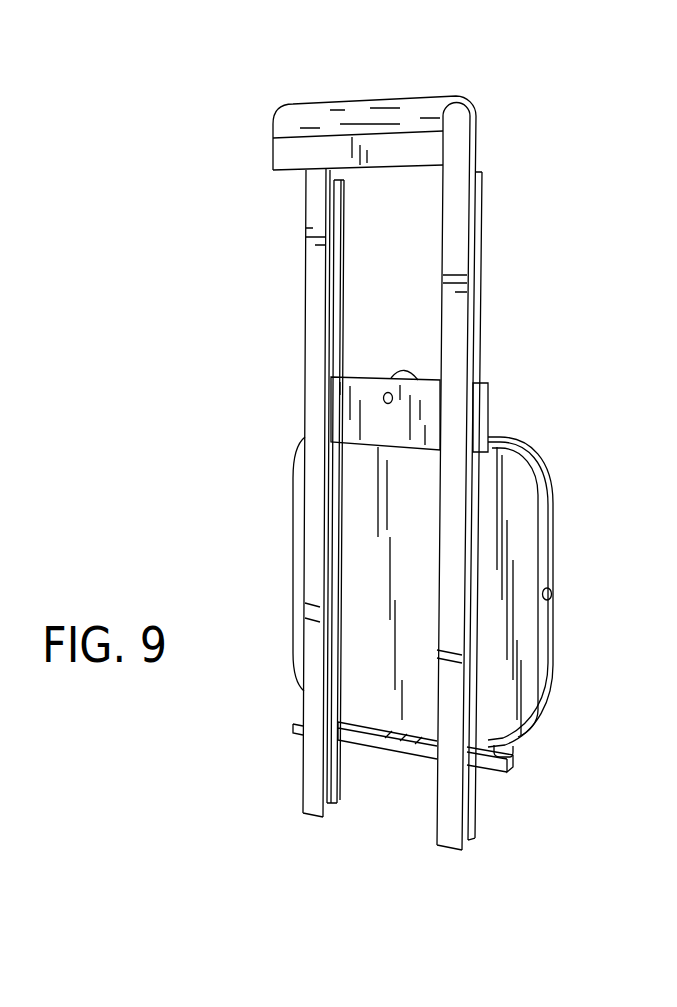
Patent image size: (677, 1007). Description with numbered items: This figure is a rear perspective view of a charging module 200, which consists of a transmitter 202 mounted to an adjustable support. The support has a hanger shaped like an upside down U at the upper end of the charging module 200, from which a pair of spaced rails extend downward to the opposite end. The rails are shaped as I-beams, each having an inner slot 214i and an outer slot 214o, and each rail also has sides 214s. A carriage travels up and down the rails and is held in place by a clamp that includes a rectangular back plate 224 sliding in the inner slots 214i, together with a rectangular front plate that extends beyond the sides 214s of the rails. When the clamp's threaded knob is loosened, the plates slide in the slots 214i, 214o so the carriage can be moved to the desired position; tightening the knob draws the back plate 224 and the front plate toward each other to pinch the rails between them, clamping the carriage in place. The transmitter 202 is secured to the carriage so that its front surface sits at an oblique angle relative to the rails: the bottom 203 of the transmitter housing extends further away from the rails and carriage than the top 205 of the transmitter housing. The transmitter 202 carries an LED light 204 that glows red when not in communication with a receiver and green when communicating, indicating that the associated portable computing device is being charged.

The charging module 200 is at (427, 473).
The inner slot 214i is at (337, 257).
The outer slot 214o is at (477, 259).
The sides of the rails 214s is at (470, 333).
The back plate 224 is at (345, 420).
The top of the transmitter housing 205 is at (502, 437).
The transmitter 202 is at (543, 537).
The LED light 204 is at (552, 594).
The bottom of the transmitter housing 203 is at (513, 743).